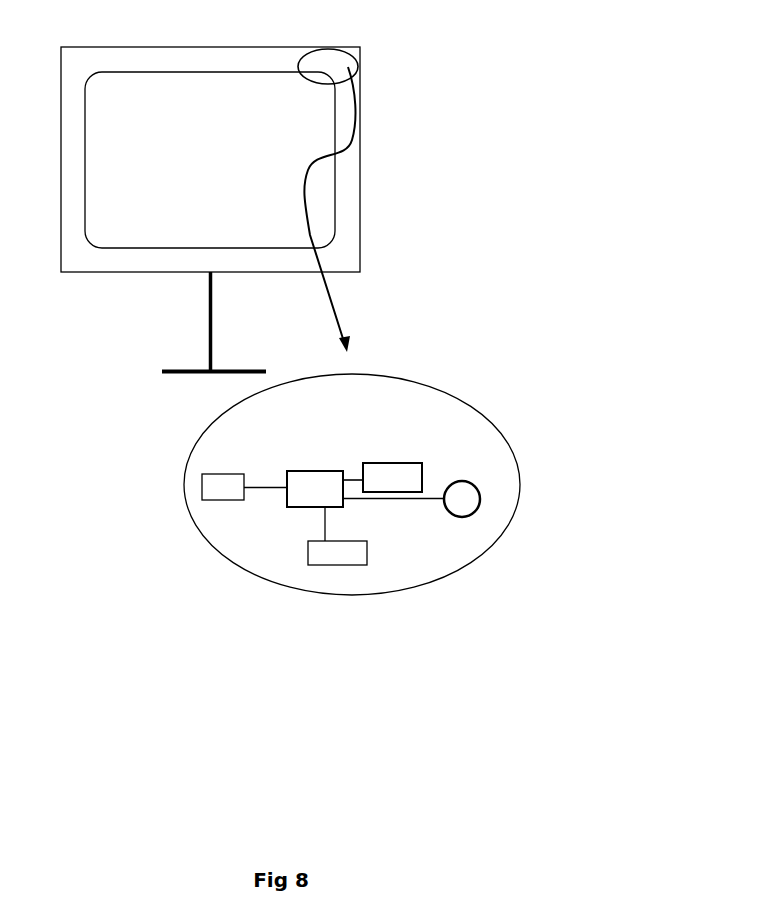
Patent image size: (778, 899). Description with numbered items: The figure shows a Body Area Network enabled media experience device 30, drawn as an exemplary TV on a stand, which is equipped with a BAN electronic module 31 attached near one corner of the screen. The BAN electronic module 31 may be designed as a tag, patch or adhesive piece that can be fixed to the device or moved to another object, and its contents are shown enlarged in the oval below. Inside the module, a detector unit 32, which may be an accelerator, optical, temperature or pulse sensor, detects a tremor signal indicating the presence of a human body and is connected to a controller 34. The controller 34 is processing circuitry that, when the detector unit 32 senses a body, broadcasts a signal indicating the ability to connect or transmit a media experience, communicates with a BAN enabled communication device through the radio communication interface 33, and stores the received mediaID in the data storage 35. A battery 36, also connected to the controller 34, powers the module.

The BAN enabled media experience device 30 is at (97, 281).
The BAN electronic module 31 is at (330, 62).
The detector unit 32 is at (411, 499).
The radio communication interface 33 is at (382, 477).
The controller 34 is at (315, 489).
The data storage 35 is at (244, 487).
The battery 36 is at (337, 536).